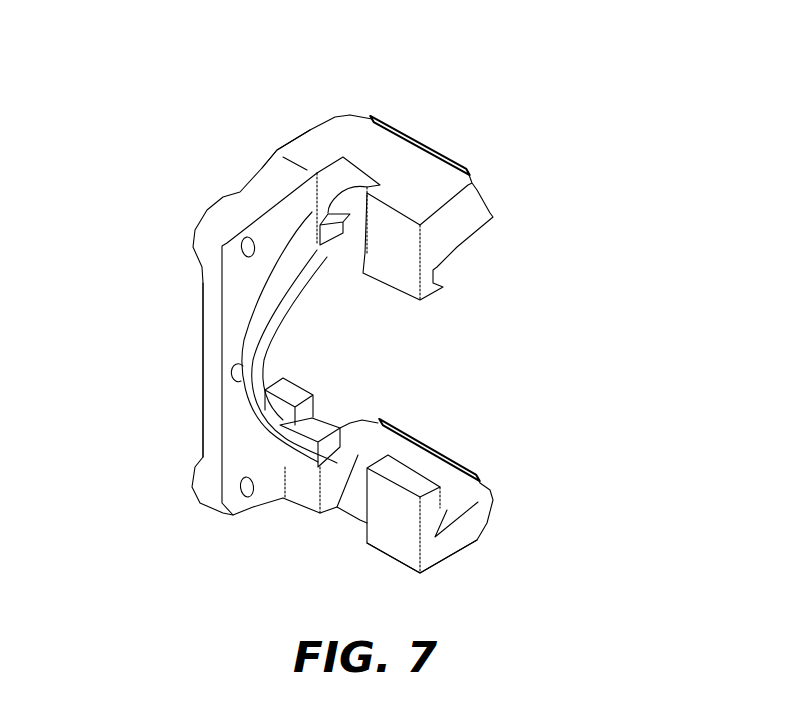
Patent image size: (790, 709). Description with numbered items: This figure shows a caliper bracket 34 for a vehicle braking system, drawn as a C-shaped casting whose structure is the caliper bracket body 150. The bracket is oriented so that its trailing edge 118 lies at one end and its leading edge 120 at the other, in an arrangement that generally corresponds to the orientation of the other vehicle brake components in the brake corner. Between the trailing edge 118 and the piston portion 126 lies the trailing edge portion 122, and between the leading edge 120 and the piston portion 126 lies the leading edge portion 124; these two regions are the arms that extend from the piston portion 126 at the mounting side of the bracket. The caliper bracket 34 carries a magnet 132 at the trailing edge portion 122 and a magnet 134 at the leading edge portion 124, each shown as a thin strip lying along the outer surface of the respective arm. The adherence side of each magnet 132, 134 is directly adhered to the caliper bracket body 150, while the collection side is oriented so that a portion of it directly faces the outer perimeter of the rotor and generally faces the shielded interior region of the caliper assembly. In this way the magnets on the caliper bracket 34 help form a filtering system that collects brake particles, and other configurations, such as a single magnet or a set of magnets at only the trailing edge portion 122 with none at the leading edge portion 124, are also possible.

The caliper bracket 34 is at (560, 148).
The trailing edge 118 is at (440, 560).
The leading edge 120 is at (342, 147).
The trailing edge portion 122 is at (535, 442).
The leading edge portion 124 is at (507, 167).
The piston portion 126 is at (163, 273).
The magnet 132 is at (443, 457).
The magnet 134 is at (417, 140).
The caliper bracket body 150 is at (305, 147).